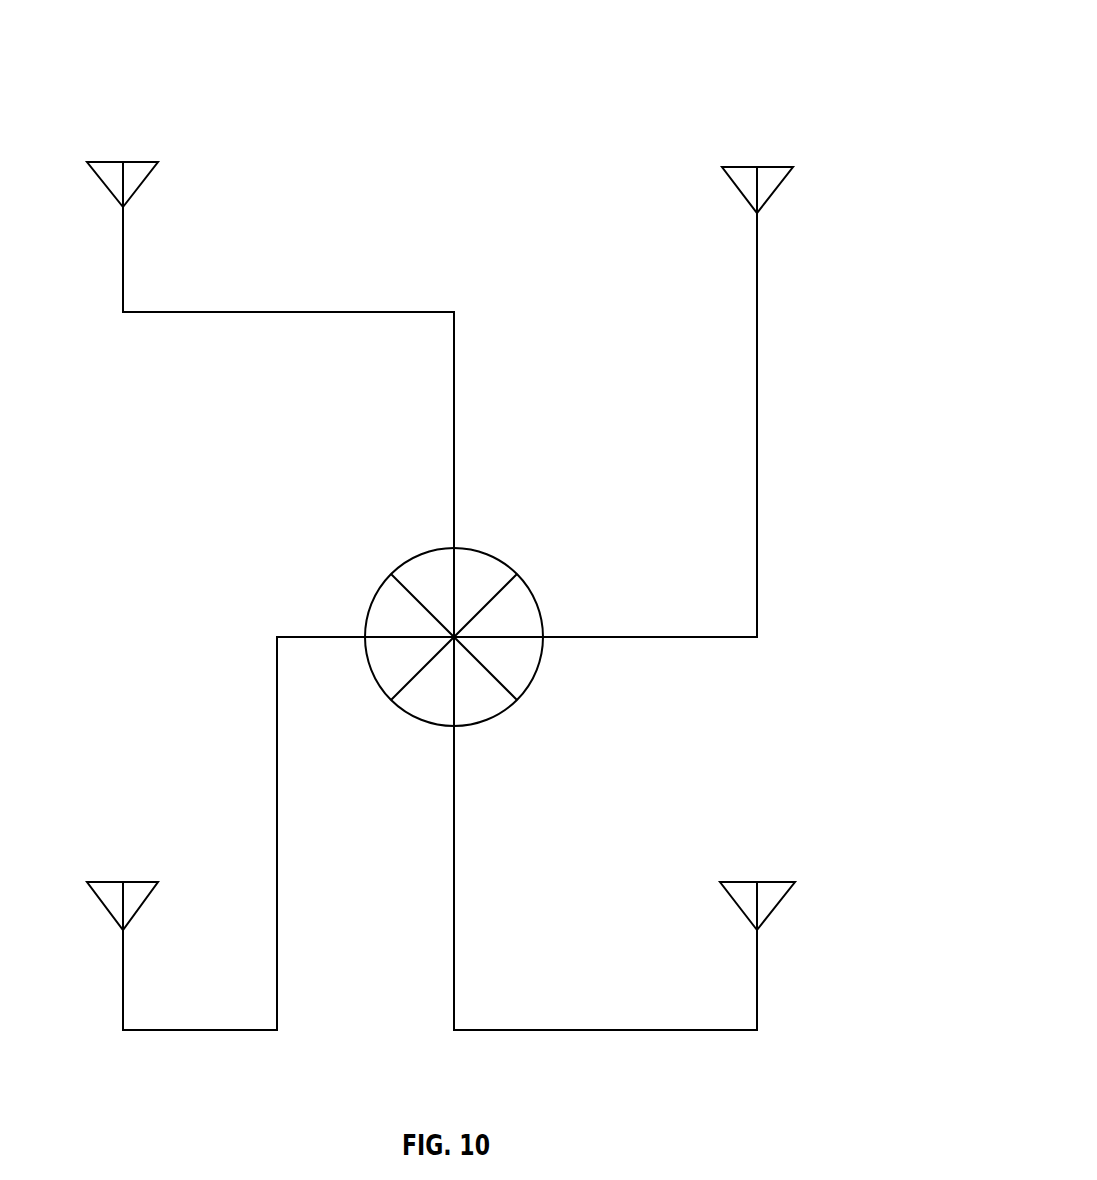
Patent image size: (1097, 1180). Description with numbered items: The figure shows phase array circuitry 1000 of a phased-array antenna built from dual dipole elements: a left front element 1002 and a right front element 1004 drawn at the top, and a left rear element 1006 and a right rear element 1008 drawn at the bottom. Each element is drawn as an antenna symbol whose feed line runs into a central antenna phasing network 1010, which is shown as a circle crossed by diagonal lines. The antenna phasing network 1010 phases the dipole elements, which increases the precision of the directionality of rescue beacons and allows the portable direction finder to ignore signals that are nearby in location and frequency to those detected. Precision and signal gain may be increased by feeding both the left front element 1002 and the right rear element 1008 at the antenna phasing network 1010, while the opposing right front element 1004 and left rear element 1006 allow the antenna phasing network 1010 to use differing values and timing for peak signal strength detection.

The phase array circuitry 1000 is at (851, 92).
The left front element 1002 is at (205, 145).
The right front element 1004 is at (848, 148).
The left rear element 1006 is at (195, 863).
The right rear element 1008 is at (838, 863).
The antenna phasing network 1010 is at (410, 557).